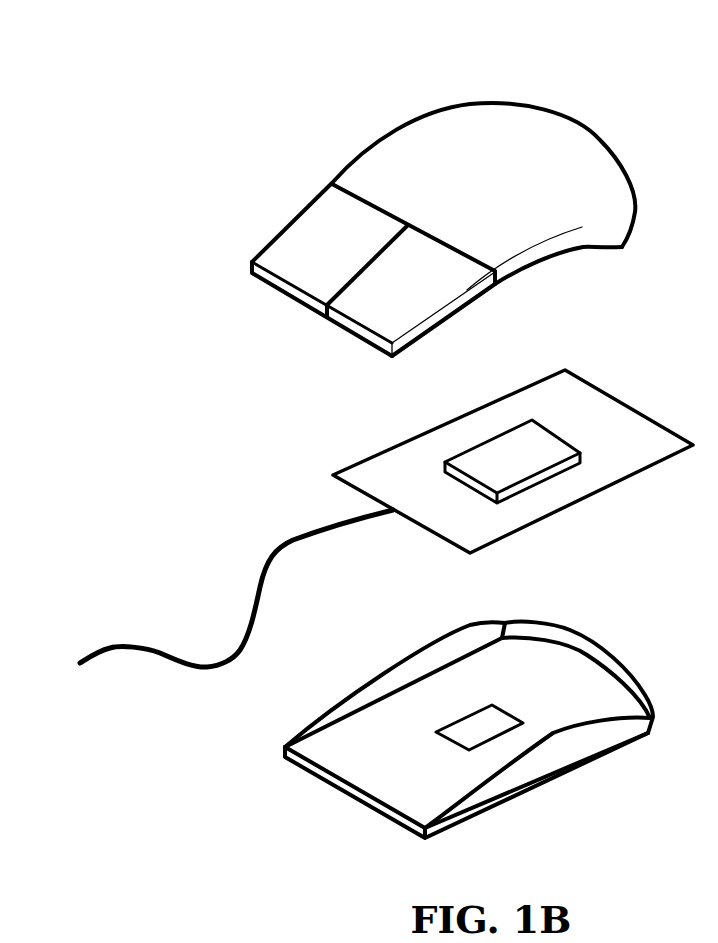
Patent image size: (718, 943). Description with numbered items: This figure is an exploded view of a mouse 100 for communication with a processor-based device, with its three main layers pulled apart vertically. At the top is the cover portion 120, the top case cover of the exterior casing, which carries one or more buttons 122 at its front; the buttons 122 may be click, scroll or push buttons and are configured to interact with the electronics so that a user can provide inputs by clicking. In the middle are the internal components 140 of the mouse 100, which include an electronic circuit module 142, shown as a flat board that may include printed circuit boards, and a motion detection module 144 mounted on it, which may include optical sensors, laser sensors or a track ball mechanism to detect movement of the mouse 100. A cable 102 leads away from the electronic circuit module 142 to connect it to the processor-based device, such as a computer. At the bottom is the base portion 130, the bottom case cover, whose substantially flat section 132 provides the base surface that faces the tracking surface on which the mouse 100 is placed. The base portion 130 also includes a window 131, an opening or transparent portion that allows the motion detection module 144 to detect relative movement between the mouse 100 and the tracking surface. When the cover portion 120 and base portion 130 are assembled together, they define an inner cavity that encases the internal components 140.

The mouse 100 is at (619, 80).
The cable 102 is at (147, 653).
The cover portion 120 is at (428, 165).
The buttons 122 is at (332, 223).
The base portion 130 is at (562, 753).
The window 131 is at (450, 738).
The substantially flat section 132 is at (553, 678).
The internal components 140 is at (333, 475).
The electronic circuit module 142 is at (605, 413).
The motion detection module 144 is at (503, 458).